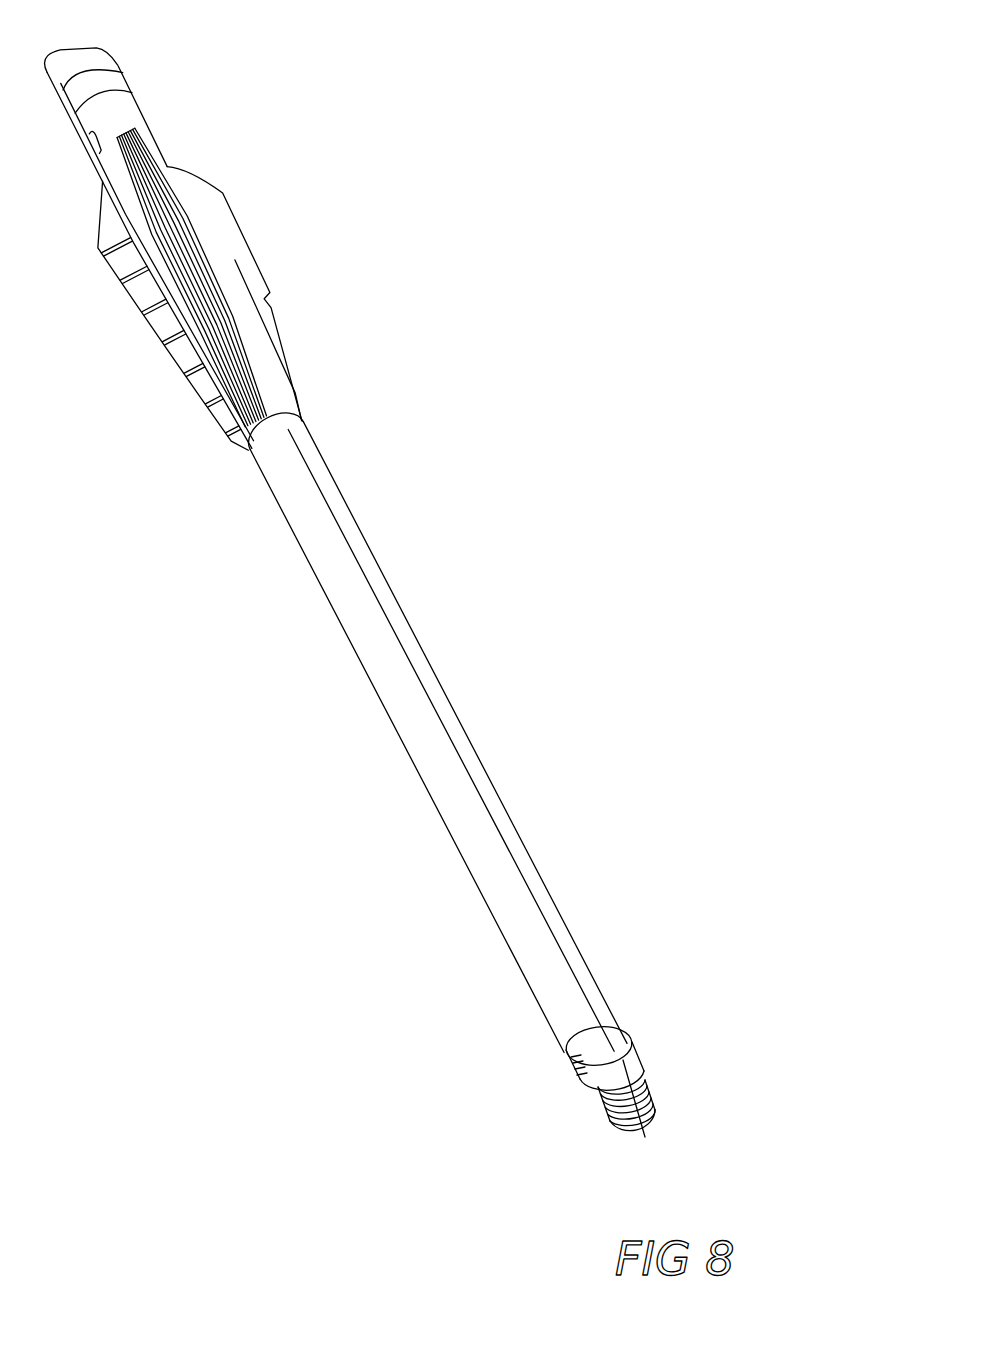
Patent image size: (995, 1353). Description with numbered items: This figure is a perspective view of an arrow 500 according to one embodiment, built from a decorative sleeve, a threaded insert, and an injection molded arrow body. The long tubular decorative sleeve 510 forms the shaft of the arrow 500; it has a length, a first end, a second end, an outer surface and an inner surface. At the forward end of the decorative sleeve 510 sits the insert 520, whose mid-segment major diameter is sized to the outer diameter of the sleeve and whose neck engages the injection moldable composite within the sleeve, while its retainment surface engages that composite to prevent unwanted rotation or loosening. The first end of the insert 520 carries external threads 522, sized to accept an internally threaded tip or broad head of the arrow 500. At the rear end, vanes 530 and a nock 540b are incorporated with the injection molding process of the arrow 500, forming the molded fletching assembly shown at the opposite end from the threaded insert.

The arrow 500 is at (533, 373).
The decorative sleeve 510 is at (415, 705).
The insert 520 is at (626, 1056).
The external threads 522 is at (652, 1102).
The vanes 530 is at (232, 248).
The nock 540b is at (105, 58).